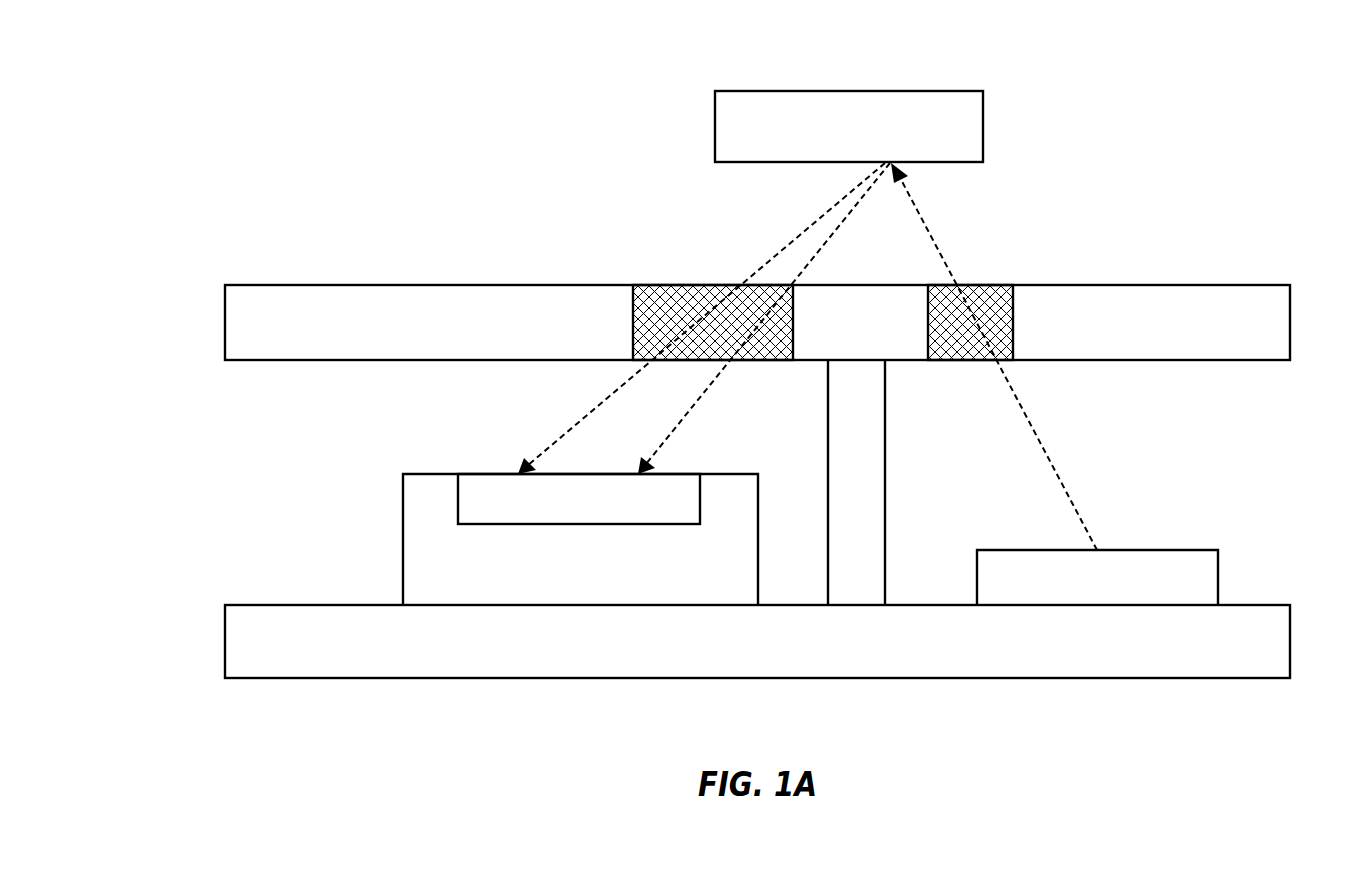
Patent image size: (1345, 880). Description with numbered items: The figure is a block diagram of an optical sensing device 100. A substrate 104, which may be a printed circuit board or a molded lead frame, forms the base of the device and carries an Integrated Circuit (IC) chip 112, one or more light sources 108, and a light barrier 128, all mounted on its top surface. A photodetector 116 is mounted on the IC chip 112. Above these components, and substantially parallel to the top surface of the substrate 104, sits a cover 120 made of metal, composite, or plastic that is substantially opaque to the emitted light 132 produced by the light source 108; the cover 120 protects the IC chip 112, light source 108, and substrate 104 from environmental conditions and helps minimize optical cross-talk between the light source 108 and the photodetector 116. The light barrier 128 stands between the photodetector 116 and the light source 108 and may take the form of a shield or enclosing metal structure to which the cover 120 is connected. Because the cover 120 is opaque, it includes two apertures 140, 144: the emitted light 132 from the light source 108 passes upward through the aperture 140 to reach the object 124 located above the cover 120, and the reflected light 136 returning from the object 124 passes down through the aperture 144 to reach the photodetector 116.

The optical sensing device 100 is at (1233, 104).
The substrate 104 is at (225, 640).
The light source 108 is at (1218, 562).
The Integrated Circuit (IC) chip 112 is at (403, 552).
The photodetector 116 is at (458, 487).
The cover 120 is at (225, 322).
The object 124 is at (983, 125).
The light barrier 128 is at (885, 535).
The emitted light 132 is at (1085, 523).
The reflected light 136 is at (820, 217).
The aperture 140 is at (988, 285).
The aperture 144 is at (647, 285).